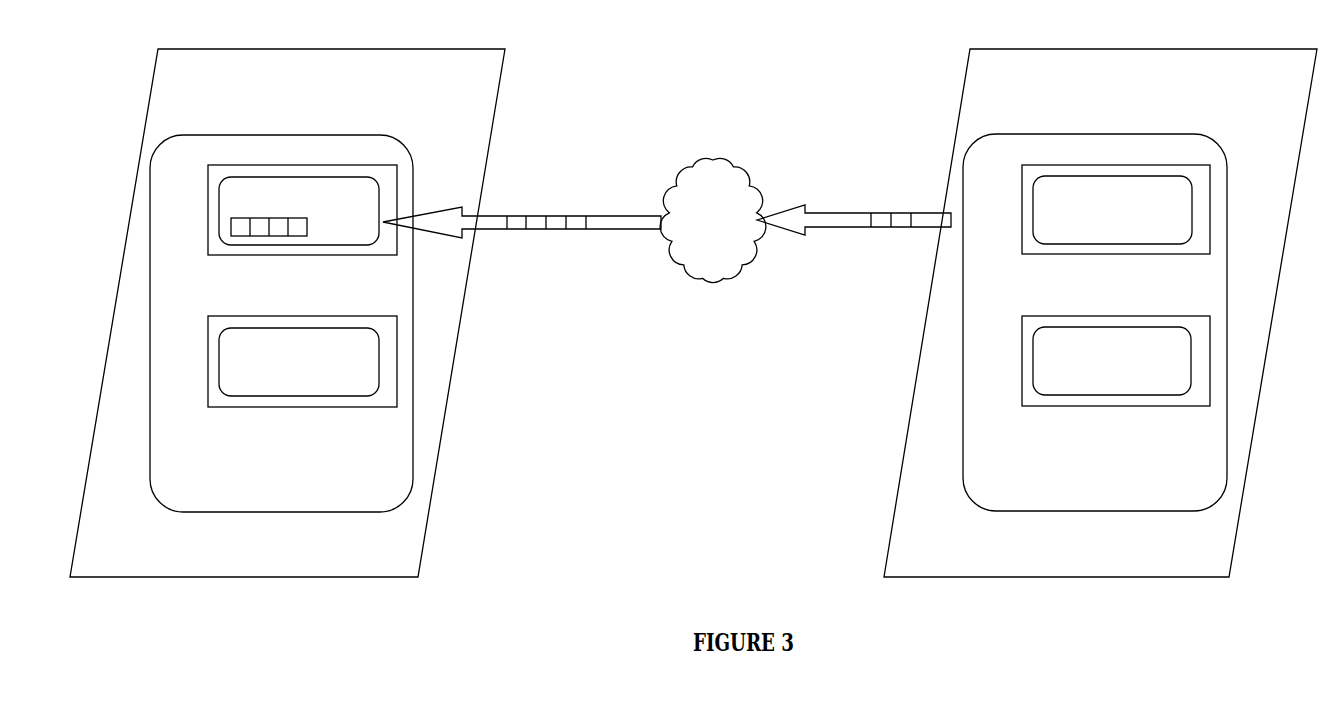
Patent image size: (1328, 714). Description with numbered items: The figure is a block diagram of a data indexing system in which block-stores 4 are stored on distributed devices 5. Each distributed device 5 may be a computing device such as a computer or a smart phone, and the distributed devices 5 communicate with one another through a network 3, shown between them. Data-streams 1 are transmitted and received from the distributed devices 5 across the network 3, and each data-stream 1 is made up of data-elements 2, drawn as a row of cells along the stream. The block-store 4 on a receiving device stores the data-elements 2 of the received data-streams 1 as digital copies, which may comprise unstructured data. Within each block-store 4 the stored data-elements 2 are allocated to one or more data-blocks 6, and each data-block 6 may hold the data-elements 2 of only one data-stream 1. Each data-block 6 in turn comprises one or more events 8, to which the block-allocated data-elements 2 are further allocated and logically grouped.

The data-stream 1 is at (635, 230).
The data-element 2 is at (243, 218).
The network 3 is at (706, 155).
The block-store 4 is at (166, 504).
The distributed device 5 is at (393, 578).
The data-block 6 is at (208, 173).
The event 8 is at (219, 232).